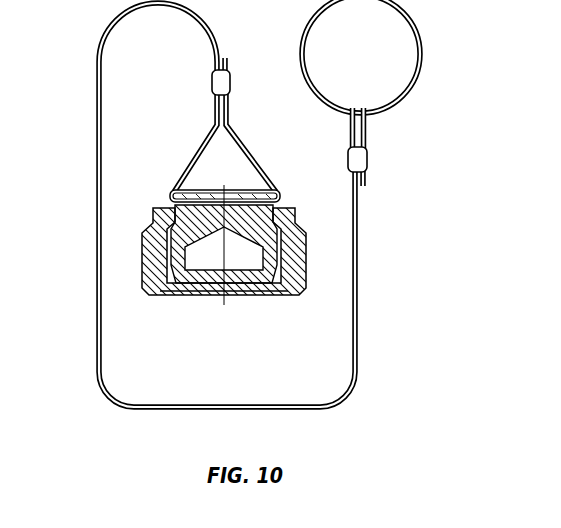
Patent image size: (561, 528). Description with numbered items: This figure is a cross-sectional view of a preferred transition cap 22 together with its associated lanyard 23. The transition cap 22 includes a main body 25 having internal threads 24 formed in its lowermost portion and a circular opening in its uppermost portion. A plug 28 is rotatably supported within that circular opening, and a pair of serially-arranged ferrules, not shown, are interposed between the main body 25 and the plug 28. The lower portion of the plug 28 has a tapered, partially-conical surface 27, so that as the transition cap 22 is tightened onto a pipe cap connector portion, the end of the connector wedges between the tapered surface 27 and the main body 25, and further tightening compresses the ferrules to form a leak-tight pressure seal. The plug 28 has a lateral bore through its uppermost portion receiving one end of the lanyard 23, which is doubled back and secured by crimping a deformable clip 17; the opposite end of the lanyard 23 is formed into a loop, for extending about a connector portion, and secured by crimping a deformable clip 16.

The deformable clip 16 is at (368, 160).
The deformable clip 17 is at (211, 85).
The transition cap 22 is at (224, 273).
The lanyard 23 is at (143, 410).
The internal threads 24 is at (171, 268).
The main body 25 is at (152, 220).
The tapered, partially-conical surface 27 is at (279, 262).
The plug 28 is at (276, 208).